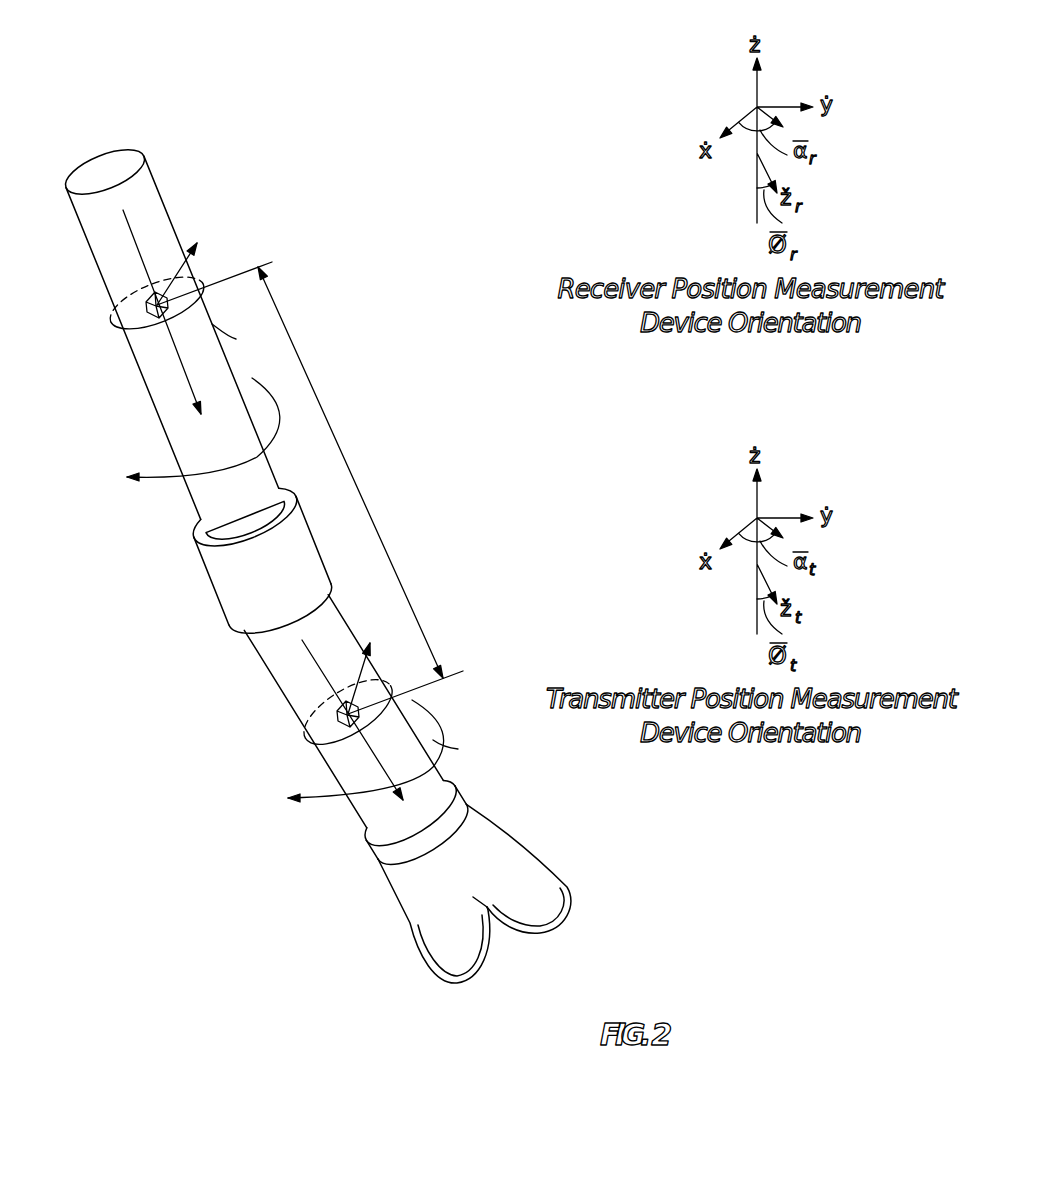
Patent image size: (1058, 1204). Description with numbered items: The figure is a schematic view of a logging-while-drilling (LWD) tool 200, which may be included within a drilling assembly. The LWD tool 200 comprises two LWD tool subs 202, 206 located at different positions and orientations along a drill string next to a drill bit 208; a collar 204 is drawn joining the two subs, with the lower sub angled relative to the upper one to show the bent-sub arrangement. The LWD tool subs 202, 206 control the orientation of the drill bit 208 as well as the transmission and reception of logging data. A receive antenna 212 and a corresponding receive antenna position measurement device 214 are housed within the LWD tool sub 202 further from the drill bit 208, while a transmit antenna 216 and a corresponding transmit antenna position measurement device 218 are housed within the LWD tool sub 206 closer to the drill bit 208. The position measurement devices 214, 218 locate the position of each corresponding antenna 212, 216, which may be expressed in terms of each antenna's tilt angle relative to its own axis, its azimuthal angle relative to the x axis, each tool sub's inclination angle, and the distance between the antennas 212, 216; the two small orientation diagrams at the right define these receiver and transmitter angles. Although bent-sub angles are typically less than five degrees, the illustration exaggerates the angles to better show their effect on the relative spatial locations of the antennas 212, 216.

The logging-while-drilling tool 200 is at (377, 240).
The LWD tool sub 202 is at (157, 182).
The coupling collar 204 is at (211, 587).
The LWD tool sub 206 is at (340, 623).
The drill bit 208 is at (510, 832).
The receive antenna 212 is at (121, 312).
The receive antenna position measurement device 214 is at (156, 333).
The transmit antenna 216 is at (347, 728).
The transmit antenna position measurement device 218 is at (330, 723).